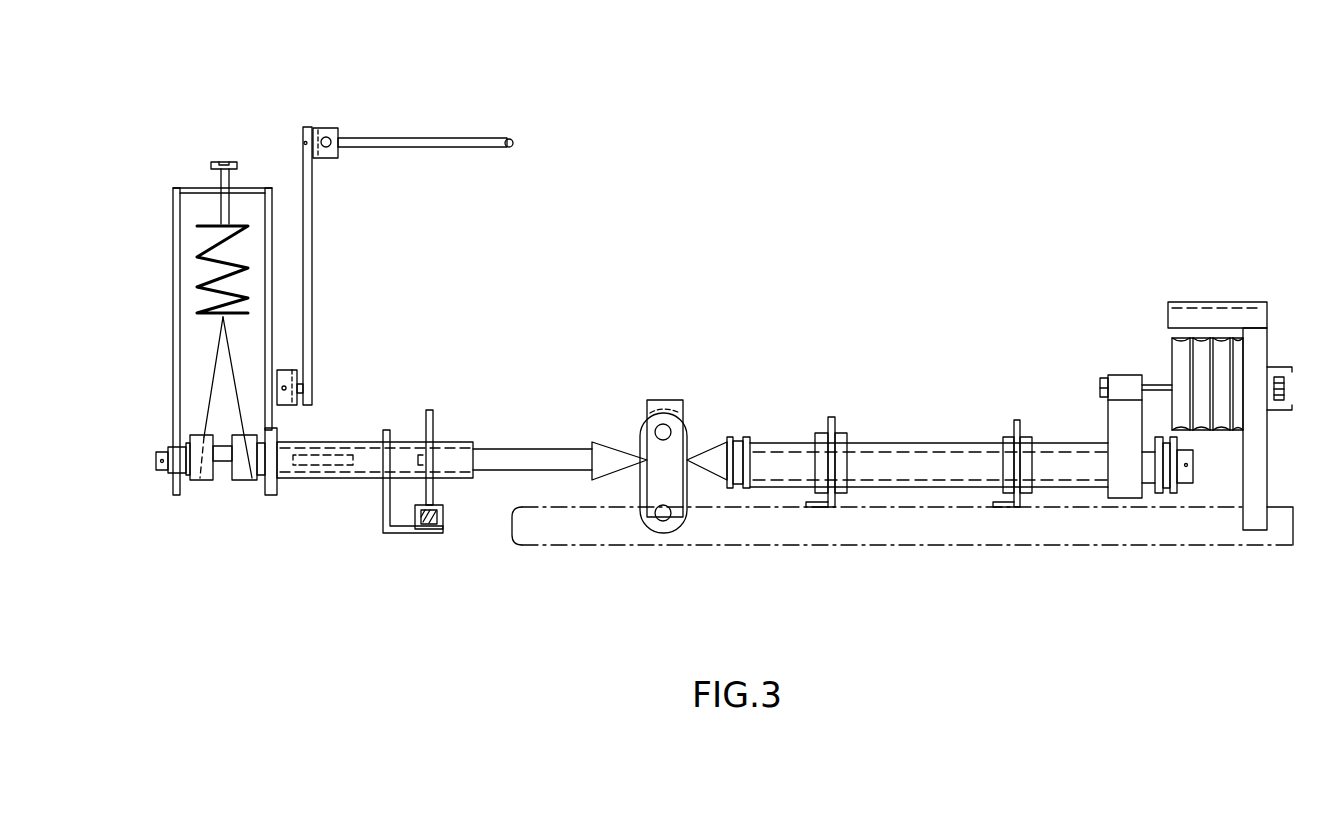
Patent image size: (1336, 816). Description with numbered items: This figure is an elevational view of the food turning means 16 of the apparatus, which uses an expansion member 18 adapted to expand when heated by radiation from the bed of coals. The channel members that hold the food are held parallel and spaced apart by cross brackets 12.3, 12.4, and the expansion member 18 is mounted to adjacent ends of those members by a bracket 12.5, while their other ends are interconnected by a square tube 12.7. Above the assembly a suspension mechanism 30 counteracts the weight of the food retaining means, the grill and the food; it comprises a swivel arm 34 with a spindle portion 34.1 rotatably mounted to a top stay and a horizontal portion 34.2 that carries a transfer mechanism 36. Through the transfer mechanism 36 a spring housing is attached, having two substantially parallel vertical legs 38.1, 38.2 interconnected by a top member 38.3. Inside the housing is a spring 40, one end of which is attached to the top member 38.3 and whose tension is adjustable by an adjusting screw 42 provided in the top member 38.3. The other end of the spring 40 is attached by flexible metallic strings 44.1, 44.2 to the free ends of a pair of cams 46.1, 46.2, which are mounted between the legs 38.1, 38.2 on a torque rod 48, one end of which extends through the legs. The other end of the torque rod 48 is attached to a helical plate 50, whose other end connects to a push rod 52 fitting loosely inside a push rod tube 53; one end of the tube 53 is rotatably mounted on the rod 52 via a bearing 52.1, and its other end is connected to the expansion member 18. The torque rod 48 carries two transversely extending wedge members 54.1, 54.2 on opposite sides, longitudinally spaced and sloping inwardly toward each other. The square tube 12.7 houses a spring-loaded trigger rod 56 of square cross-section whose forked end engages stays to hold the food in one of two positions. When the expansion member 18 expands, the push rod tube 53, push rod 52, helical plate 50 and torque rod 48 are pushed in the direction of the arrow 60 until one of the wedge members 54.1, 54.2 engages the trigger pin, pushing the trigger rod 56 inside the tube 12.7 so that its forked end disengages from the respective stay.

The food turning means 16 is at (921, 228).
The expansion member 18 is at (1153, 348).
The suspension mechanism 30 is at (443, 110).
The swivel arm 34 is at (432, 147).
The spindle portion 34.1 is at (511, 151).
The horizontal portion 34.2 is at (330, 134).
The transfer mechanism 36 is at (326, 280).
The vertical leg 38.1 is at (181, 347).
The vertical leg 38.2 is at (271, 261).
The top member 38.3 is at (201, 188).
The spring 40 is at (214, 231).
The adjusting screw 42 is at (233, 163).
The flexible metallic string 44.1 is at (224, 369).
The flexible metallic string 44.2 is at (240, 421).
The cam 46.1 is at (206, 438).
The cam 46.2 is at (240, 481).
The torque rod 48 is at (548, 456).
The helical plate 50 is at (706, 452).
The push rod 52 is at (932, 482).
The bearing 52.1 is at (745, 440).
The push rod tube 53 is at (923, 442).
The wedge member 54.1 is at (460, 458).
The wedge member 54.2 is at (339, 470).
The trigger rod 56 is at (432, 521).
The arrow 60 is at (943, 352).
The cross bracket 12.3 is at (830, 508).
The cross bracket 12.4 is at (1017, 510).
The bracket 12.5 is at (1253, 532).
The square tube 12.7 is at (413, 518).